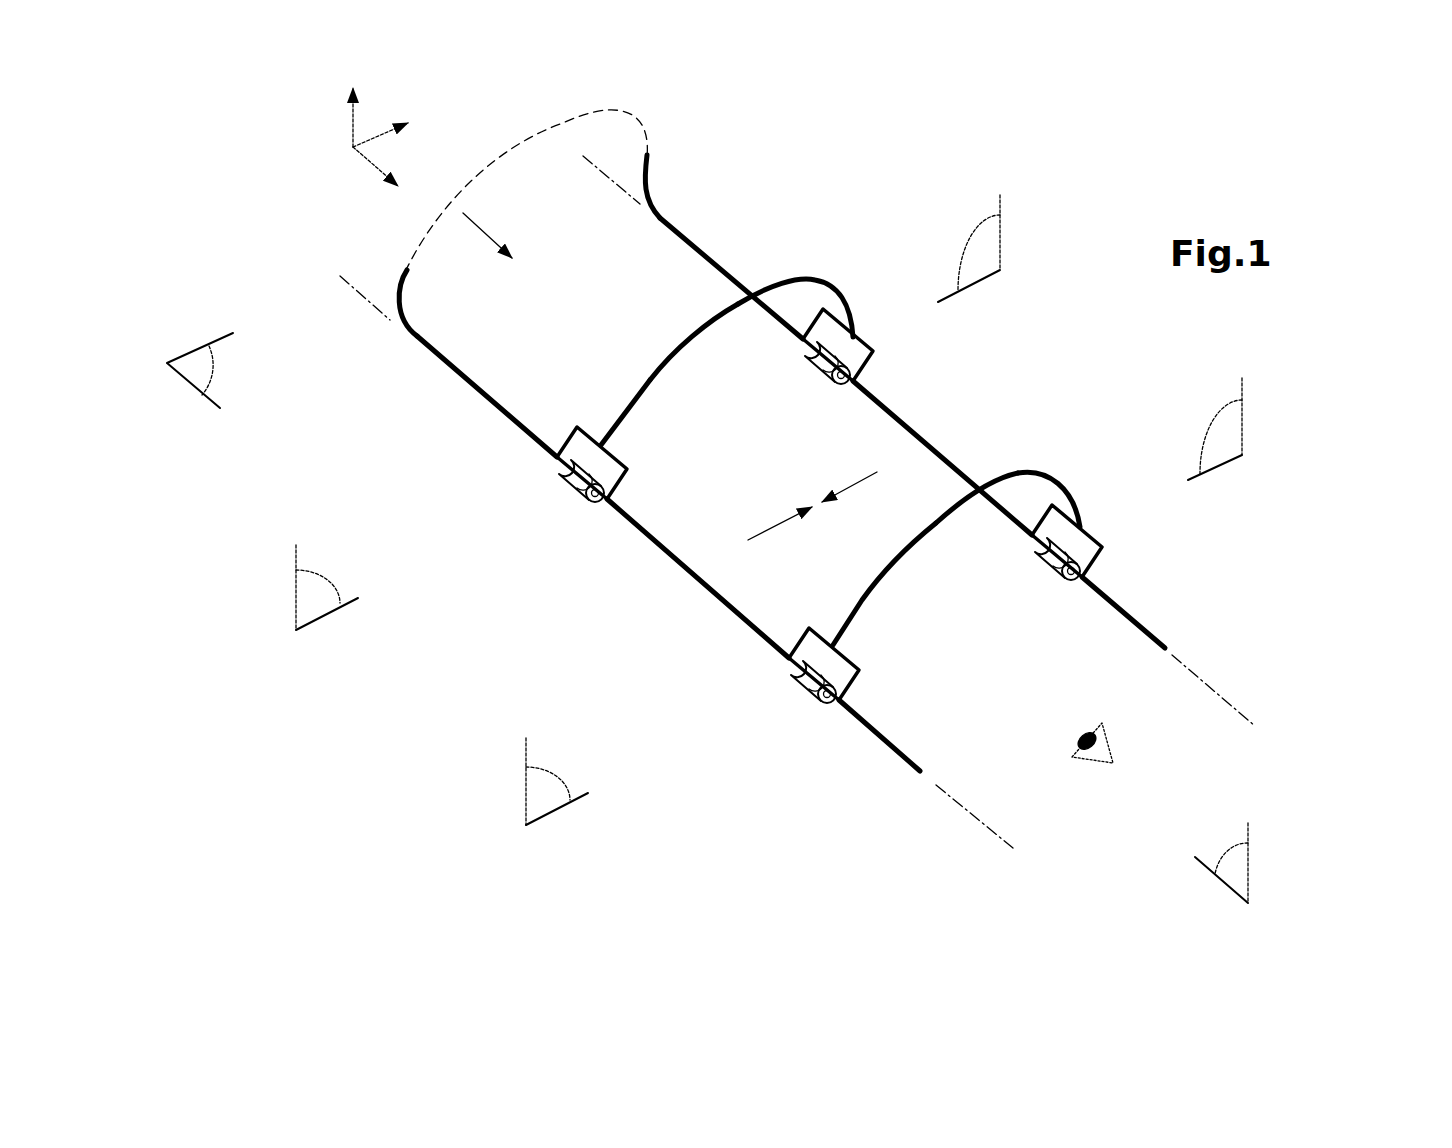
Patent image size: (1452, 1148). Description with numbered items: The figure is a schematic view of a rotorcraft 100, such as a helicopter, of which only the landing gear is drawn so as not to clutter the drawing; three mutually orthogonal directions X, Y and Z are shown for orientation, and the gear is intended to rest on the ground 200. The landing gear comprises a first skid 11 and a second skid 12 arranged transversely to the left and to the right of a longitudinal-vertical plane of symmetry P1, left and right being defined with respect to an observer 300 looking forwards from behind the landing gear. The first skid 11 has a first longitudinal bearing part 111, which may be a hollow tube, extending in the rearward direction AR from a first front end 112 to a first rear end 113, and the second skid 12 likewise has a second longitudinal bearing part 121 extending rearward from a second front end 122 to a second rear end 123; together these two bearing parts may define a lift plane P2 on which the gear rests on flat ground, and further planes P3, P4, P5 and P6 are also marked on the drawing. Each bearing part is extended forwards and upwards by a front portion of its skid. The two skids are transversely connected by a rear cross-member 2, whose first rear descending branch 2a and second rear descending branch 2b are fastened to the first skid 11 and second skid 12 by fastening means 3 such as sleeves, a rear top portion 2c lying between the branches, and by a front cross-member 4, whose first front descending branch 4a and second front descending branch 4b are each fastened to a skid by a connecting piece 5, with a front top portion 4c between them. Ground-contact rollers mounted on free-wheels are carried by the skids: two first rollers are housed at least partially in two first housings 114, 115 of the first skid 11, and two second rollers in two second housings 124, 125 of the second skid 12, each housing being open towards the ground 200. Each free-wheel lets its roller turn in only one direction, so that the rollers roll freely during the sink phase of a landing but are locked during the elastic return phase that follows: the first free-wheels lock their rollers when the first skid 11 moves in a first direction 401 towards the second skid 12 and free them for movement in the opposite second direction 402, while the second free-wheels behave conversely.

The rotorcraft 100 is at (342, 222).
The ground 200 is at (745, 843).
The observer 300 is at (1107, 745).
The first skid 11 is at (655, 548).
The second skid 12 is at (907, 408).
The first longitudinal bearing part 111 is at (722, 599).
The first front end 112 is at (436, 363).
The first rear end 113 is at (920, 770).
The first housing 114 is at (552, 486).
The first housing 115 is at (840, 714).
The second longitudinal bearing part 121 is at (927, 447).
The second front end 122 is at (693, 225).
The second rear end 123 is at (1163, 650).
The second housing 124 is at (877, 368).
The second housing 125 is at (1104, 547).
The rear cross-member 2 is at (932, 528).
The first rear descending branch 2a is at (850, 612).
The second rear descending branch 2b is at (1003, 475).
The rear top portion 2c is at (960, 510).
The fastening means 3 is at (926, 608).
The front cross-member 4 is at (680, 259).
The first front descending branch 4a is at (618, 414).
The second front descending branch 4b is at (778, 280).
The front top portion 4c is at (717, 317).
The connecting piece 5 is at (658, 431).
The first direction 401 is at (748, 540).
The second direction 402 is at (877, 472).
The rearward direction AR is at (483, 230).
The longitudinal-vertical plane of symmetry P1 is at (1235, 878).
The lift plane P2 is at (205, 362).
The third plane P3 is at (323, 598).
The fourth plane P4 is at (555, 795).
The fifth plane P5 is at (988, 250).
The sixth plane P6 is at (1230, 438).
The direction X is at (388, 171).
The direction Y is at (390, 125).
The direction Z is at (338, 114).